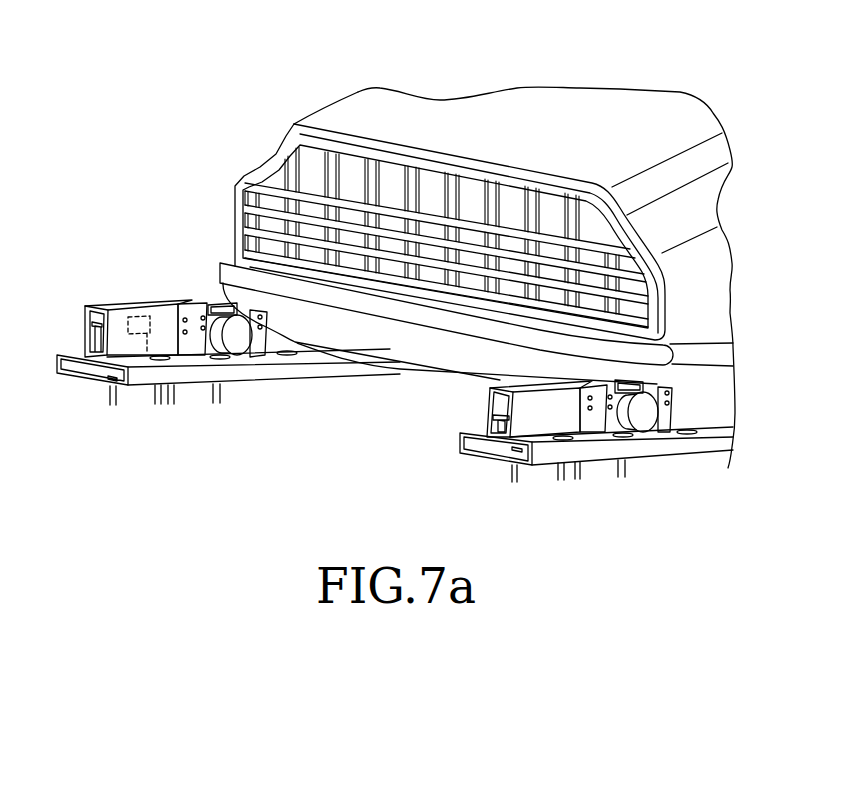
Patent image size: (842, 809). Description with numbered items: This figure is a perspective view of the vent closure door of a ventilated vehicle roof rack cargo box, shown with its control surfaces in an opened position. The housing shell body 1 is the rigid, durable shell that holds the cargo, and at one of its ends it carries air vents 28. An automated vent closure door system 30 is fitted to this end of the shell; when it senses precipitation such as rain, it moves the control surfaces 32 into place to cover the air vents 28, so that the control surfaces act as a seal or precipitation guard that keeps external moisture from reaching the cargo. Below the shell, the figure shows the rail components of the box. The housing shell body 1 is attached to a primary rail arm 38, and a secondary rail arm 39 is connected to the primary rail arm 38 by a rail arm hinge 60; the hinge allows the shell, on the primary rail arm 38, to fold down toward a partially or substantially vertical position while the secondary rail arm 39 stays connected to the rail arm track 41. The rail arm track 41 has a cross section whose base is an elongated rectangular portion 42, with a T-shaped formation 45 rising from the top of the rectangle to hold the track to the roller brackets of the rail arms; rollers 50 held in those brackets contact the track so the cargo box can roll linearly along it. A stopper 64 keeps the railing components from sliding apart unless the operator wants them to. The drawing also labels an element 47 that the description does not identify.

The housing shell body 1 is at (301, 83).
The air vents 28 is at (282, 140).
The automated vent closure door system 30 is at (270, 236).
The control surfaces 32 is at (243, 183).
The primary rail arm 38 is at (285, 342).
The secondary rail arm 39 is at (108, 306).
The rail arm track 41 is at (77, 380).
The elongated rectangular shape 42 is at (128, 386).
The T shaped formation 45 is at (93, 347).
The bracket plate 47 is at (180, 352).
The rollers 50 is at (505, 416).
The rail arm hinges 60 is at (238, 342).
The stopper 64 is at (147, 316).